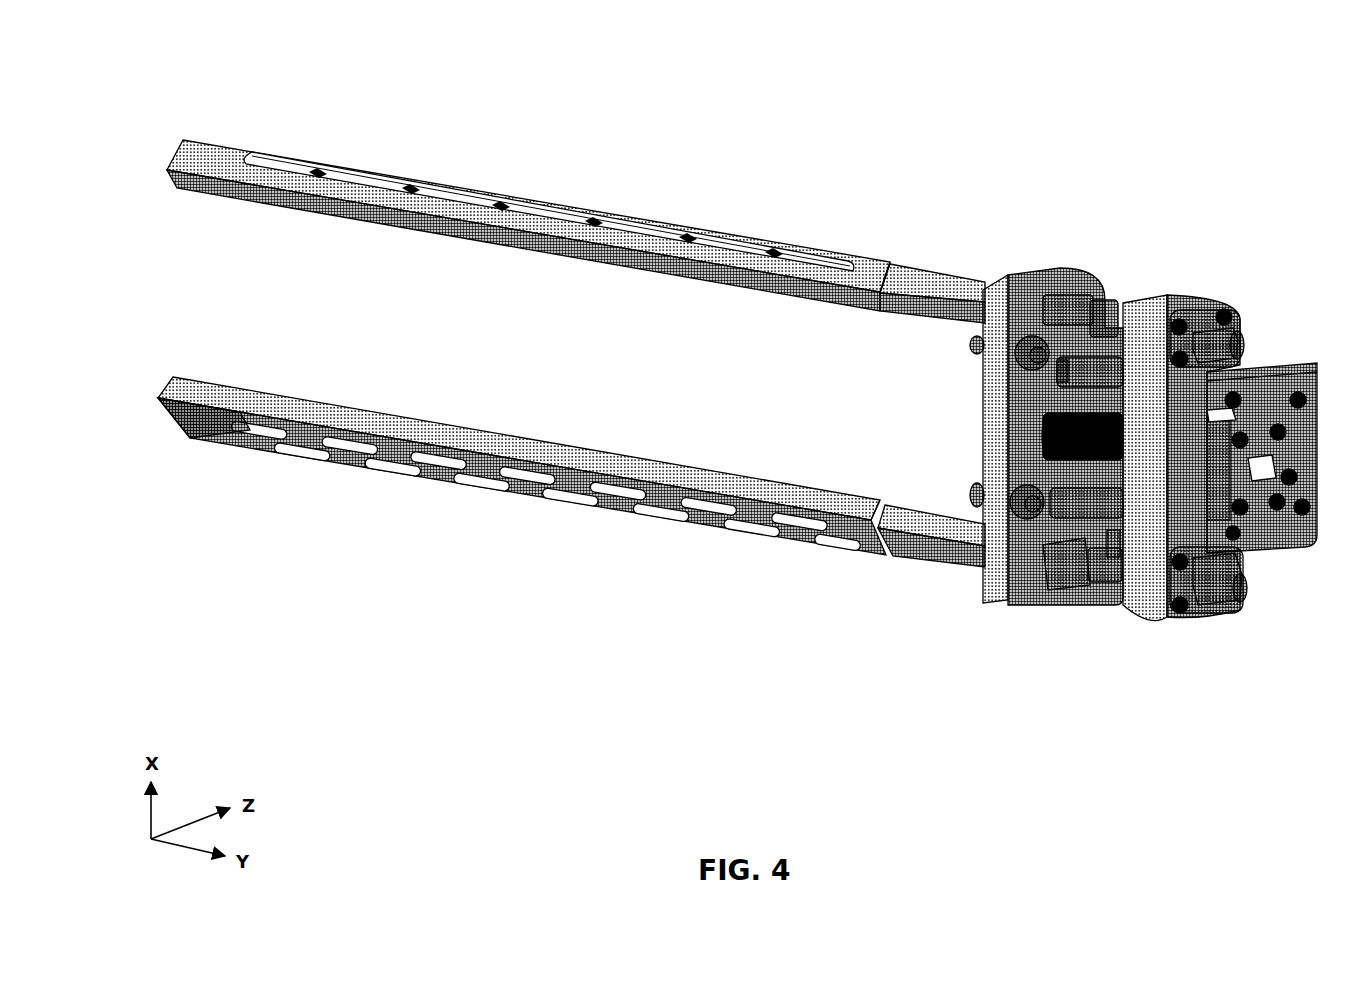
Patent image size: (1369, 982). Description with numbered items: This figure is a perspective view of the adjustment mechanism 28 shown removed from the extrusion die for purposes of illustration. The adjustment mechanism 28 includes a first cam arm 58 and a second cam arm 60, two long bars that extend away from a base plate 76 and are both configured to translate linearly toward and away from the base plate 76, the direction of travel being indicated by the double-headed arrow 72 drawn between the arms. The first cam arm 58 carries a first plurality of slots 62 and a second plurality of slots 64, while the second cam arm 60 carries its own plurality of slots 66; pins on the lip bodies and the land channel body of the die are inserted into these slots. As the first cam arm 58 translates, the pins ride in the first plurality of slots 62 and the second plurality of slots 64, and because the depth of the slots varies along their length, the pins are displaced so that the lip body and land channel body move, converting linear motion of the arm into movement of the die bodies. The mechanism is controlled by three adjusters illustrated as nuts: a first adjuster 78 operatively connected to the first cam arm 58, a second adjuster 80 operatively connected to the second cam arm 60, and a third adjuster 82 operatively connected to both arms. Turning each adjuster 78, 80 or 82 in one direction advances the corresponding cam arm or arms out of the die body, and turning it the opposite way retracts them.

The adjustment mechanism 28 is at (1164, 431).
The first cam arm 58 is at (561, 472).
The second cam arm 60 is at (576, 195).
The first plurality of slots 62 is at (333, 460).
The second plurality of slots 64 is at (233, 418).
The plurality of slots 66 is at (250, 157).
The direction of movement 72 is at (781, 381).
The base plate 76 is at (1038, 271).
The first adjuster 78 is at (1225, 613).
The second adjuster 80 is at (1251, 340).
The third adjuster 82 is at (1309, 463).